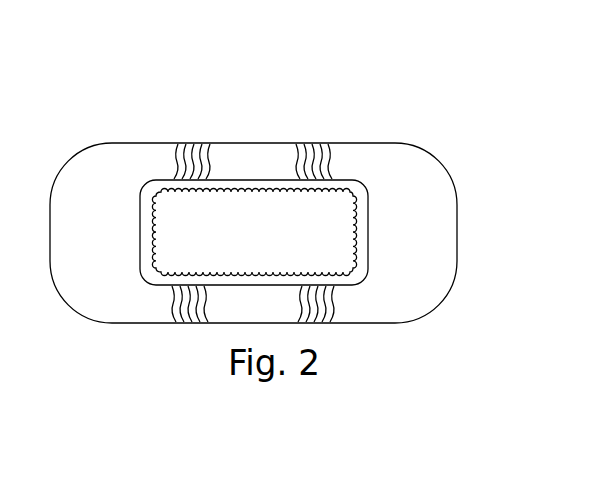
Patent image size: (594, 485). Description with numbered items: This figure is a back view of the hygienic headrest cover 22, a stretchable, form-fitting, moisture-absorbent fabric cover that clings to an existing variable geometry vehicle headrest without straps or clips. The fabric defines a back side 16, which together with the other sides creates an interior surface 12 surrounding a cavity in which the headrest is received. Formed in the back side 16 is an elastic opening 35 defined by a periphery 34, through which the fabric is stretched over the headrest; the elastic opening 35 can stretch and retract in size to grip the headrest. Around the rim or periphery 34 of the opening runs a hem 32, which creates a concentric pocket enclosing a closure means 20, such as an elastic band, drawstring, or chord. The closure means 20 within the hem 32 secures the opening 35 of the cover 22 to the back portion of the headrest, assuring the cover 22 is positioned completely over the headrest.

The interior surface 12 is at (283, 230).
The back side 16 is at (125, 215).
The closure means 20 is at (367, 203).
The cover 22 is at (428, 237).
The hem 32 is at (367, 183).
The periphery 34 is at (163, 192).
The elastic opening 35 is at (187, 258).